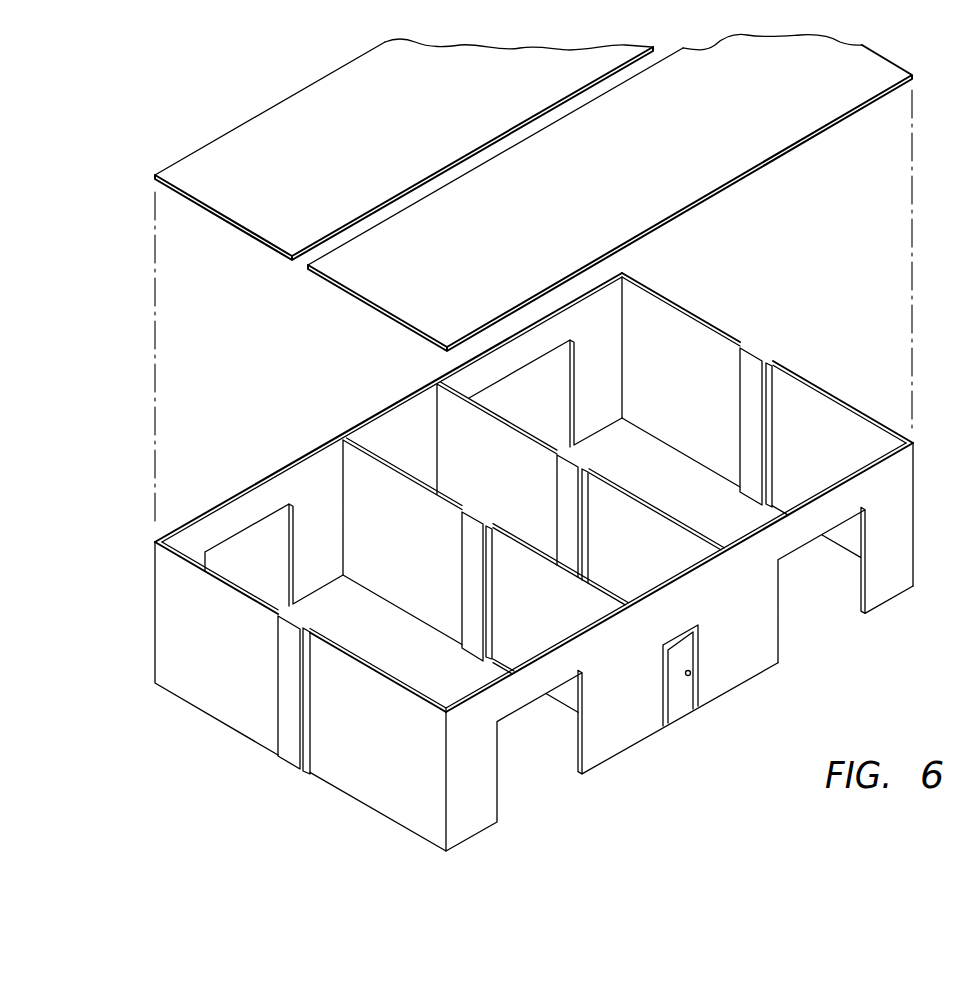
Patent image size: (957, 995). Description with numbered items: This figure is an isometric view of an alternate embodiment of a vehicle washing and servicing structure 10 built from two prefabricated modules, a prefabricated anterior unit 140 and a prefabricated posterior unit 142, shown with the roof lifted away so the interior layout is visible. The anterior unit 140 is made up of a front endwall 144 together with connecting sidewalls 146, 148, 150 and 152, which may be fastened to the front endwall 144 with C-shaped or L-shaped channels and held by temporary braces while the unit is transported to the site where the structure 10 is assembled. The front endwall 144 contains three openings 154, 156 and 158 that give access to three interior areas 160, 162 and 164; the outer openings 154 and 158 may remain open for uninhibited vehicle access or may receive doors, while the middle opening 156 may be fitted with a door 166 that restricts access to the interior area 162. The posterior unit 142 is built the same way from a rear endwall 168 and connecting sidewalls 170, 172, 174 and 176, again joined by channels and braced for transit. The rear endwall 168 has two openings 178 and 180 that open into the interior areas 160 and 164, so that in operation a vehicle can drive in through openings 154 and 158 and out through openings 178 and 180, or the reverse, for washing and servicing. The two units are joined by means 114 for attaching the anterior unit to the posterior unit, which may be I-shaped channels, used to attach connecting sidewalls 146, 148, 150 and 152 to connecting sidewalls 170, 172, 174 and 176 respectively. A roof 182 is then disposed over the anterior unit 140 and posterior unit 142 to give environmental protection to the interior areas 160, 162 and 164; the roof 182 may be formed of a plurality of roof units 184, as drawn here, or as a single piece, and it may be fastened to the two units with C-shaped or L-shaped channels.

The vehicle washing and servicing structure 10 is at (711, 791).
The means for attaching anterior unit to posterior unit 114 is at (766, 349).
The prefabricated anterior unit 140 is at (307, 806).
The prefabricated posterior unit 142 is at (208, 760).
The front endwall 144 is at (618, 753).
The connecting sidewall 146 is at (371, 808).
The connecting sidewall 148 is at (565, 710).
The connecting sidewall 150 is at (613, 480).
The connecting sidewall 152 is at (832, 392).
The opening 154 is at (556, 807).
The opening 156 is at (684, 715).
The opening 158 is at (846, 613).
The interior area 160 is at (439, 670).
The interior area 162 is at (489, 463).
The interior area 164 is at (694, 505).
The door 166 is at (691, 676).
The rear endwall 168 is at (288, 465).
The connecting sidewall 170 is at (168, 693).
The connecting sidewall 172 is at (396, 608).
The connecting sidewall 174 is at (458, 402).
The connecting sidewall 176 is at (678, 303).
The opening 178 is at (269, 575).
The opening 180 is at (554, 407).
The roof 182 is at (210, 99).
The roof unit 184 is at (296, 93).